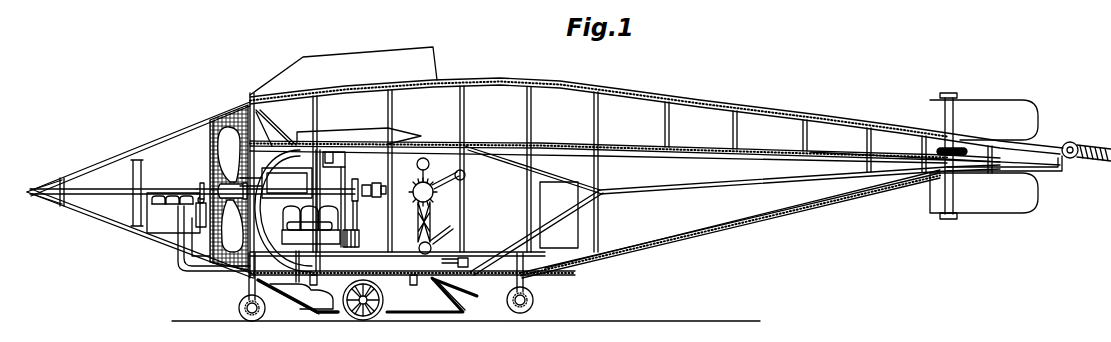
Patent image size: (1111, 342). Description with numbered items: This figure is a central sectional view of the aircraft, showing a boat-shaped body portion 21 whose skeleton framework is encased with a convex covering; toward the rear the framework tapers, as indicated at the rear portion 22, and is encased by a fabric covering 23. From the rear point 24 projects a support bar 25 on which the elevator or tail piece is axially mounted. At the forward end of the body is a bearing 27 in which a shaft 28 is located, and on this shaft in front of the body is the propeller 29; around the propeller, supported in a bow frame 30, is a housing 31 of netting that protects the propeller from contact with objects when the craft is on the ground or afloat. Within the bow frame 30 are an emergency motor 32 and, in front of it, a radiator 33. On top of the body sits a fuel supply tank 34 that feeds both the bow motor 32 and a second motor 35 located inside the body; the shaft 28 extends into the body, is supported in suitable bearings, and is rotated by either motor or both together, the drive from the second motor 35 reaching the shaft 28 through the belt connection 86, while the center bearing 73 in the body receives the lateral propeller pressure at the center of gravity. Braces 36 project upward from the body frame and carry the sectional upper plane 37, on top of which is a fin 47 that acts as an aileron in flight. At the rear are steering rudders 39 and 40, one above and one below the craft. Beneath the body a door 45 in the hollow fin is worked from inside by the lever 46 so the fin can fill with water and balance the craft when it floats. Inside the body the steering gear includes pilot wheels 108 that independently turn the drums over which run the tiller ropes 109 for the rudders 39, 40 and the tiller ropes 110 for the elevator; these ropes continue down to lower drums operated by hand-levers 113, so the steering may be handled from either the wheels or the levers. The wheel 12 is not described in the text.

The wheel 12 is at (362, 319).
The body portion 21 is at (490, 143).
The rear portion of the skeleton frame work 22 is at (781, 205).
The fabric covering 23 is at (856, 203).
The point 24 is at (940, 176).
The support bar 25 is at (1063, 173).
The bearing 27 is at (278, 146).
The shaft 28 is at (292, 211).
The propeller 29 is at (230, 133).
The bow frame 30 is at (166, 148).
The housing 31 is at (212, 158).
The motor 32 is at (164, 218).
The radiator 33 is at (137, 206).
The fuel supply tank 34 is at (354, 137).
The second motor 35 is at (305, 252).
The braces 36 is at (529, 117).
The upper plane 37 is at (560, 80).
The steering rudder 39 is at (984, 120).
The steering rudder 40 is at (984, 193).
The door 45 is at (471, 297).
The lever 46 is at (468, 270).
The fin 47 is at (343, 71).
The bearing 73 is at (376, 181).
The belt connection 86 is at (358, 219).
The pilot wheels 108 is at (433, 206).
The tiller ropes 109 is at (903, 158).
The tiller ropes 110 is at (1066, 141).
The hand-levers 113 is at (448, 231).